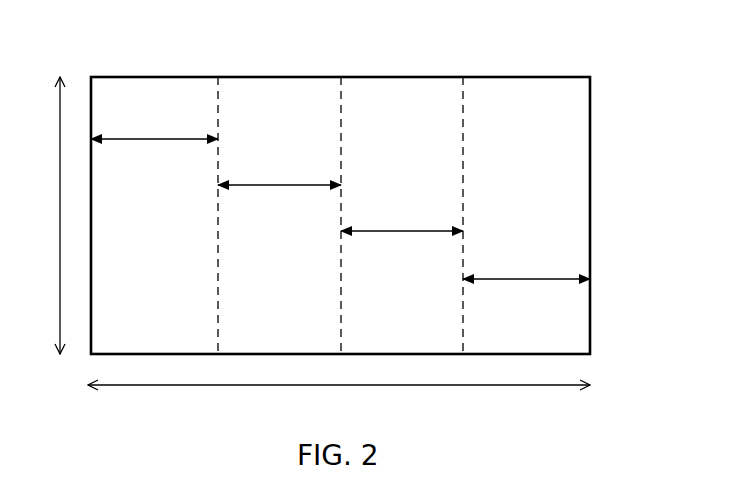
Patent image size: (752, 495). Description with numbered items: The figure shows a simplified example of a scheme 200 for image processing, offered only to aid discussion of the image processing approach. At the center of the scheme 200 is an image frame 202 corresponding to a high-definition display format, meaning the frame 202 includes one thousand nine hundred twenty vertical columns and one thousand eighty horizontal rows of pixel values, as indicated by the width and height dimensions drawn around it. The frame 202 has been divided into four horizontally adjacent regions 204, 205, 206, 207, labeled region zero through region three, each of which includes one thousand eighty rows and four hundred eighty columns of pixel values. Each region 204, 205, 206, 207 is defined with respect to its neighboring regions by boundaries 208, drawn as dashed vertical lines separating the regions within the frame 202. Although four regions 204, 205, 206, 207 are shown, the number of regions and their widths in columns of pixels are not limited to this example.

The scheme 200 is at (651, 355).
The image frame 202 is at (590, 100).
The region 204 is at (168, 349).
The region 205 is at (295, 349).
The region 206 is at (417, 349).
The region 207 is at (542, 349).
The boundaries 208 is at (462, 138).